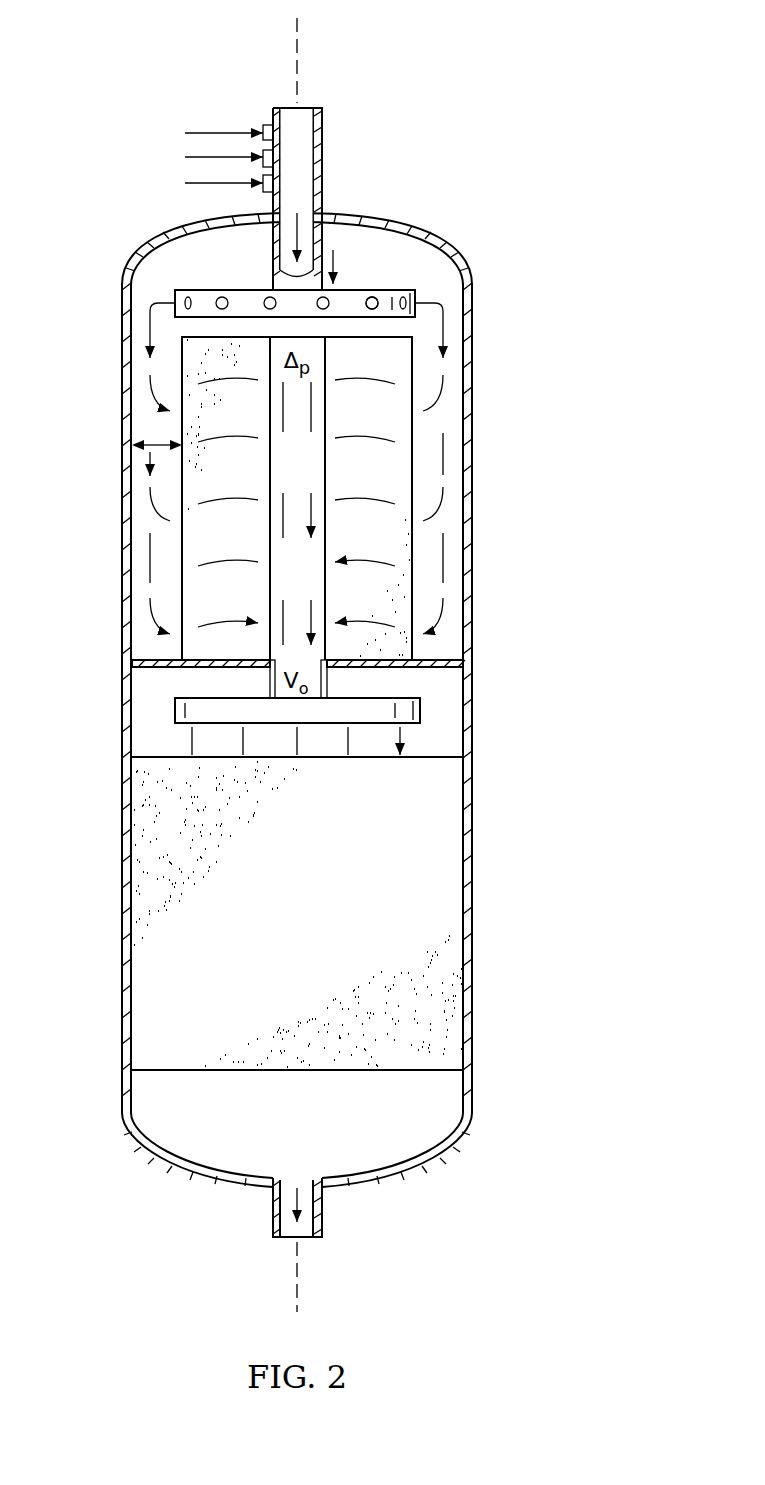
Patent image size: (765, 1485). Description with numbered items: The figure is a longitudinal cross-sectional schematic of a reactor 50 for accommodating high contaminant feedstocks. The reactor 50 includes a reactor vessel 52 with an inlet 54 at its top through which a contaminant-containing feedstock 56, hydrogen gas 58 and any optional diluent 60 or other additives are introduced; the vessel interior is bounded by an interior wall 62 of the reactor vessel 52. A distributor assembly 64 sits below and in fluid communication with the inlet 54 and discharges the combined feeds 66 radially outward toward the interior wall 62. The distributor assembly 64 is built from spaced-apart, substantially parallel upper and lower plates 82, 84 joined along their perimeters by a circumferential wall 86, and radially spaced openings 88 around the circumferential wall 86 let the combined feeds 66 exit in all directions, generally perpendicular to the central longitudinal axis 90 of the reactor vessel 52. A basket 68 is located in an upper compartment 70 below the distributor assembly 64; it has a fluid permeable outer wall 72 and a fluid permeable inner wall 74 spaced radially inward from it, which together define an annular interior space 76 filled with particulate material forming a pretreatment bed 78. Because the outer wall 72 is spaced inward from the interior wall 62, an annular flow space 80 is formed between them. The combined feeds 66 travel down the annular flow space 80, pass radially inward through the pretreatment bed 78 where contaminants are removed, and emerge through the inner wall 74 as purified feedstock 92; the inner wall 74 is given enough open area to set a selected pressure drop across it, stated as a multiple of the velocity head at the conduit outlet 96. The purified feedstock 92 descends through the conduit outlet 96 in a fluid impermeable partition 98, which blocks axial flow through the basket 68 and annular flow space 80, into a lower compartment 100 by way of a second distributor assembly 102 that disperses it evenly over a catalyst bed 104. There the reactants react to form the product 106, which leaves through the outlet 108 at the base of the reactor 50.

The reactor 50 is at (316, 700).
The reactor vessel 52 is at (121, 548).
The inlet 54 is at (323, 143).
The contaminant-containing feedstock 56 is at (207, 131).
The hydrogen gas 58 is at (198, 157).
The diluent 60 is at (197, 183).
The interior wall 62 is at (132, 400).
The distributor assembly 64 is at (338, 258).
The combined feeds 66 is at (283, 242).
The basket 68 is at (414, 548).
The upper compartment 70 is at (444, 424).
The fluid permeable outer wall 72 is at (414, 612).
The fluid permeable inner wall 74 is at (324, 467).
The annular interior space 76 is at (376, 546).
The pretreatment bed 78 is at (183, 383).
The annular flow space 80 is at (143, 478).
The upper plate 82 is at (398, 290).
The lower plate 84 is at (455, 322).
The circumferential wall 86 is at (200, 297).
The openings 88 is at (374, 300).
The central longitudinal axis 90 is at (299, 34).
The purified feedstock 92 is at (325, 612).
The conduit outlet 96 is at (328, 675).
The partition 98 is at (446, 666).
The lower compartment 100 is at (446, 740).
The second distributor assembly 102 is at (175, 705).
The catalyst bed 104 is at (276, 928).
The product 106 is at (323, 1210).
The outlet 108 is at (272, 1212).